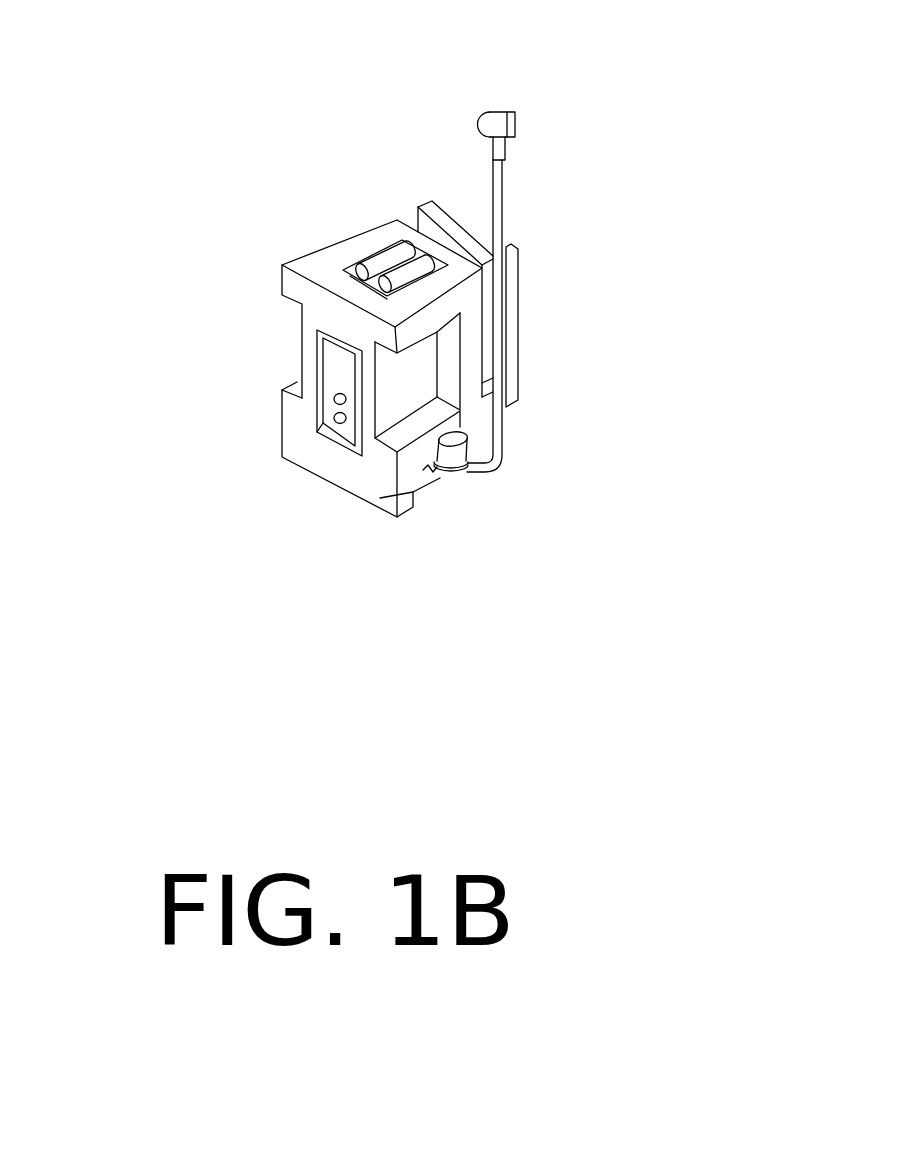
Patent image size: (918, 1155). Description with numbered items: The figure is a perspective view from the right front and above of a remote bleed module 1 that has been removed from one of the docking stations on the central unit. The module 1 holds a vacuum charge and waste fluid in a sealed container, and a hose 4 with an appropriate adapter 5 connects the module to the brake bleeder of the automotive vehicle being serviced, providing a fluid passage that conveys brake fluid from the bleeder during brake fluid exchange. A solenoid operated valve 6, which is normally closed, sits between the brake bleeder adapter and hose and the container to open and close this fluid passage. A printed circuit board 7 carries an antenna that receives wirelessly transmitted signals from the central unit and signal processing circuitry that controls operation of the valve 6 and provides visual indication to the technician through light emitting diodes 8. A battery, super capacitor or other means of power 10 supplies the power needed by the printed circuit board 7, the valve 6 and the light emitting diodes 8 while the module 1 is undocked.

The remote bleed module 1 is at (357, 178).
The hose 4 is at (503, 212).
The adapter 5 is at (497, 122).
The solenoid operated valve 6 is at (459, 462).
The printed circuit board 7 is at (340, 362).
The light emitting diodes 8 is at (337, 418).
The battery or other means of power 10 is at (385, 262).